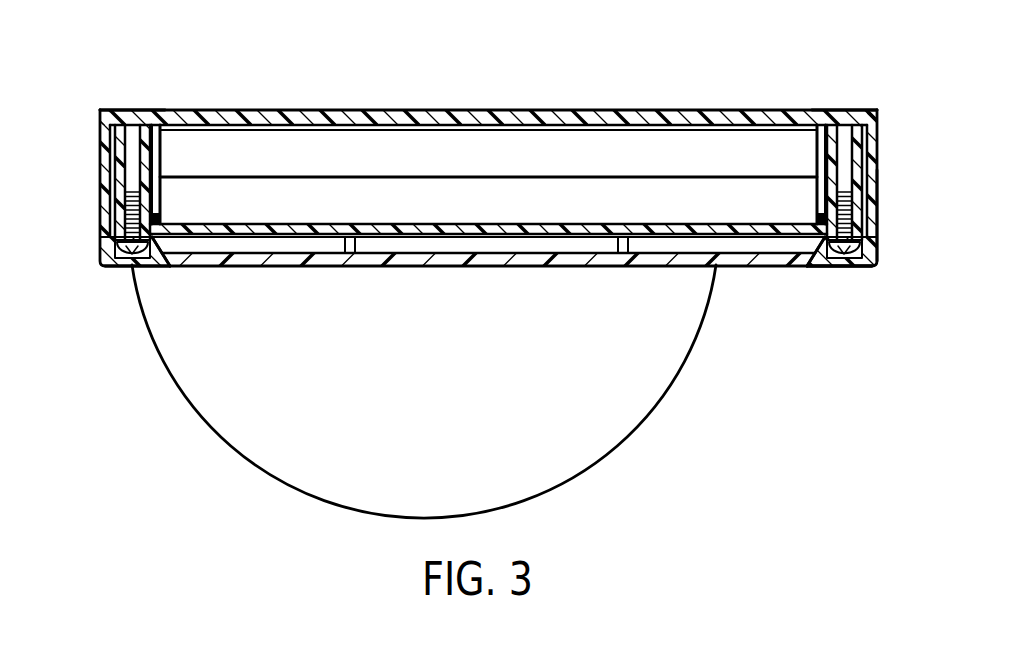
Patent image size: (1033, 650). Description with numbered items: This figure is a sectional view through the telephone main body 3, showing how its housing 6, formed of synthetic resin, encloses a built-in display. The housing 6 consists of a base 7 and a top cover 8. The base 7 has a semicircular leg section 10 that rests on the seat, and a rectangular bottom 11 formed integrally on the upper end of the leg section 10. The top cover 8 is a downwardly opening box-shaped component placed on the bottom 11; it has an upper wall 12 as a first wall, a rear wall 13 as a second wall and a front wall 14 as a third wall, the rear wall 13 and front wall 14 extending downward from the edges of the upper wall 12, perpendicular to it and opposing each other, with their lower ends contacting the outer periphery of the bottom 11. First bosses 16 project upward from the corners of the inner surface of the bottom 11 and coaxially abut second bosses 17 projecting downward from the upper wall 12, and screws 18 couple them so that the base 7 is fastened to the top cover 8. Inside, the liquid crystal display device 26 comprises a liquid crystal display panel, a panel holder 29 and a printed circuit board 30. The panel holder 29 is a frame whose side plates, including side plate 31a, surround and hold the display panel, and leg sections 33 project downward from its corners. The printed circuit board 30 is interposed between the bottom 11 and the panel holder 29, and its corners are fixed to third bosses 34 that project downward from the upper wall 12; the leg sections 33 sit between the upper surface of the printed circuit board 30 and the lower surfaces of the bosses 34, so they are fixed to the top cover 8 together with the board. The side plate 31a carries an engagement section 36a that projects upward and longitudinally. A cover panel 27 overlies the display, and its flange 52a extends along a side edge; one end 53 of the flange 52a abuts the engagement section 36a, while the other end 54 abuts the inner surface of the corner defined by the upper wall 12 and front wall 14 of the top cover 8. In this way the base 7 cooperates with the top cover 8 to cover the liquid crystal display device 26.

The telephone main body 3 is at (812, 72).
The housing 6 is at (918, 341).
The base 7 is at (867, 258).
The top cover 8 is at (880, 203).
The leg section 10 is at (607, 427).
The bottom 11 is at (550, 266).
The upper wall 12 is at (528, 118).
The rear wall 13 is at (877, 162).
The front wall 14 is at (102, 168).
The first bosses 16 is at (168, 243).
The second bosses 17 is at (143, 143).
The screws 18 is at (127, 252).
The liquid crystal display device 26 is at (397, 179).
The cover panel 27 is at (615, 128).
The panel holder 29 is at (587, 155).
The printed circuit board 30 is at (448, 229).
The side plate 31a is at (400, 146).
The leg sections 33 is at (155, 218).
The third bosses 34 is at (155, 190).
The engagement section 36a is at (793, 128).
The flange 52a is at (308, 128).
The end 53 is at (812, 113).
The other end 54 is at (165, 126).